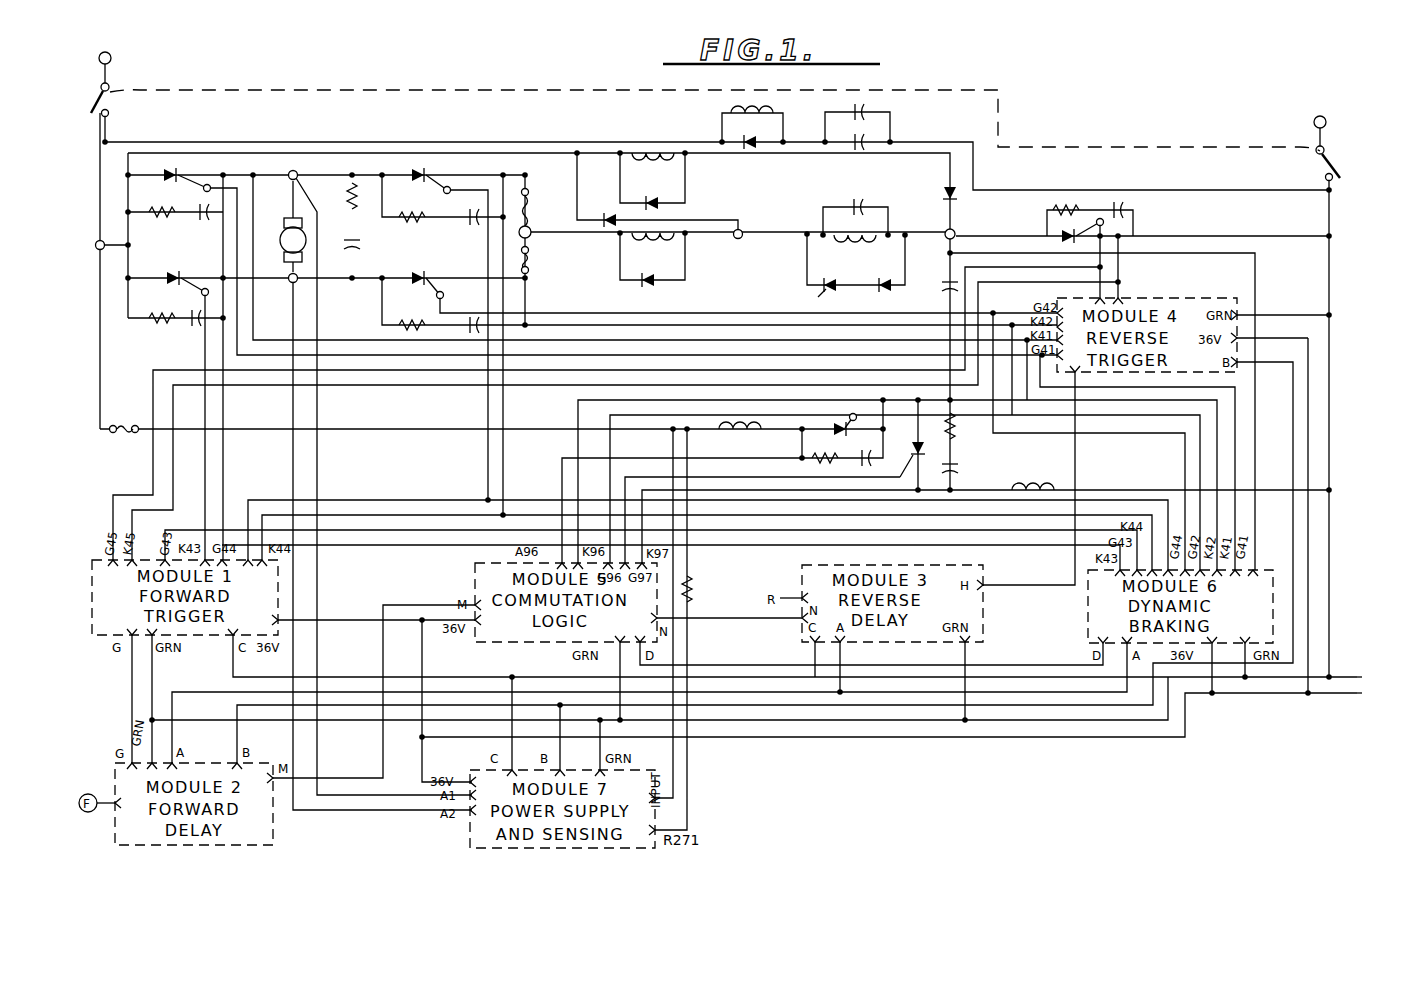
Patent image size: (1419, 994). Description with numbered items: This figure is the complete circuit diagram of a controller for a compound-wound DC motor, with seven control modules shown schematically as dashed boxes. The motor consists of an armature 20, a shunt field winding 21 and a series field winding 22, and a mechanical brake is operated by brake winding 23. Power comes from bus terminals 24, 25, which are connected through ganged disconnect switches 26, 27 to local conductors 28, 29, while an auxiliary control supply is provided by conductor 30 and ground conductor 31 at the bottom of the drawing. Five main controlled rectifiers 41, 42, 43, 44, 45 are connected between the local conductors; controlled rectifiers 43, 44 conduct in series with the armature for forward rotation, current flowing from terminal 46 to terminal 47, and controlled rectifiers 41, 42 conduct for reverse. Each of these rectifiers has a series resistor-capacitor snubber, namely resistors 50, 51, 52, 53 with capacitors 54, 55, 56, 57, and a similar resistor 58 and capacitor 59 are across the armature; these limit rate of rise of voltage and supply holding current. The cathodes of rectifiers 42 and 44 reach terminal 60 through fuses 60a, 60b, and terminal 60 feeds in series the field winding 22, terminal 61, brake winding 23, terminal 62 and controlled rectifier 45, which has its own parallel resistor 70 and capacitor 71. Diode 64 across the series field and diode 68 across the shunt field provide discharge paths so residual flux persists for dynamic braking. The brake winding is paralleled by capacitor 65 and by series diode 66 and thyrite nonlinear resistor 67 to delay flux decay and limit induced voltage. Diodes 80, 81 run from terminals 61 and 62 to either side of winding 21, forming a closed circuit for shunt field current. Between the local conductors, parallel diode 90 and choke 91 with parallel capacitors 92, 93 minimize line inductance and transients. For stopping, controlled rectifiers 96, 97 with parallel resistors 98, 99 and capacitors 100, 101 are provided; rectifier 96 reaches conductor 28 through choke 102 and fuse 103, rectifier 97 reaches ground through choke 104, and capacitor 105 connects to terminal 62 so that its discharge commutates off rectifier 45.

The motor armature 20 is at (283, 250).
The shunt field winding 21 is at (648, 152).
The series field winding 22 is at (660, 240).
The brake winding 23 is at (857, 243).
The bus terminal 24 is at (111, 55).
The bus terminal 25 is at (1327, 121).
The disconnect switch 26 is at (96, 105).
The disconnect switch 27 is at (1336, 158).
The local conductor 28 is at (100, 212).
The local conductor 29 is at (1330, 292).
The conductor 30 is at (1263, 696).
The ground conductor 31 is at (1353, 674).
The controlled rectifier 41 is at (169, 168).
The controlled rectifier 42 is at (428, 262).
The controlled rectifier 43 is at (178, 283).
The controlled rectifier 44 is at (416, 182).
The controlled rectifier 45 is at (1058, 237).
The motor terminal 46 is at (290, 287).
The motor terminal 47 is at (299, 172).
The resistor 50 is at (160, 228).
The resistor 51 is at (414, 316).
The resistor 52 is at (150, 330).
The resistor 53 is at (414, 224).
The capacitor 54 is at (203, 221).
The capacitor 55 is at (473, 315).
The capacitor 56 is at (193, 328).
The capacitor 57 is at (473, 227).
The resistor 58 is at (346, 196).
The capacitor 59 is at (357, 247).
The terminal 60 is at (532, 232).
The fuse 60a is at (529, 191).
The fuse 60b is at (531, 263).
The terminal 61 is at (737, 240).
The terminal 62 is at (946, 233).
The diode 64 is at (651, 288).
The capacitor 65 is at (859, 200).
The diode 66 is at (889, 290).
The nonlinear resistor 67 is at (824, 288).
The diode 68 is at (670, 198).
The resistor 70 is at (1052, 209).
The capacitor 71 is at (1135, 208).
The diode 80 is at (610, 213).
The diode 81 is at (944, 195).
The diode 90 is at (760, 138).
The choke 91 is at (732, 110).
The capacitor 92 is at (875, 140).
The capacitor 93 is at (870, 112).
The controlled rectifier 96 is at (838, 434).
The controlled rectifier 97 is at (916, 446).
The resistor 98 is at (860, 451).
The resistor 99 is at (957, 430).
The capacitor 100 is at (830, 466).
The capacitor 101 is at (958, 468).
The choke 102 is at (741, 436).
The fuse 103 is at (142, 408).
The choke 104 is at (1047, 478).
The capacitor 105 is at (945, 283).